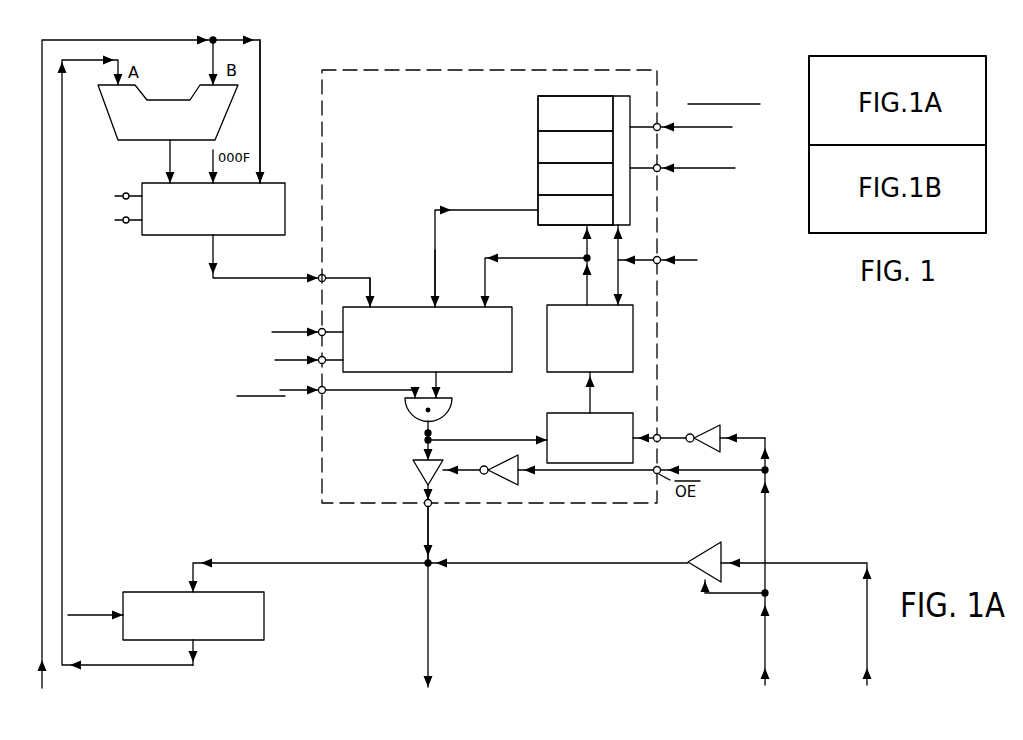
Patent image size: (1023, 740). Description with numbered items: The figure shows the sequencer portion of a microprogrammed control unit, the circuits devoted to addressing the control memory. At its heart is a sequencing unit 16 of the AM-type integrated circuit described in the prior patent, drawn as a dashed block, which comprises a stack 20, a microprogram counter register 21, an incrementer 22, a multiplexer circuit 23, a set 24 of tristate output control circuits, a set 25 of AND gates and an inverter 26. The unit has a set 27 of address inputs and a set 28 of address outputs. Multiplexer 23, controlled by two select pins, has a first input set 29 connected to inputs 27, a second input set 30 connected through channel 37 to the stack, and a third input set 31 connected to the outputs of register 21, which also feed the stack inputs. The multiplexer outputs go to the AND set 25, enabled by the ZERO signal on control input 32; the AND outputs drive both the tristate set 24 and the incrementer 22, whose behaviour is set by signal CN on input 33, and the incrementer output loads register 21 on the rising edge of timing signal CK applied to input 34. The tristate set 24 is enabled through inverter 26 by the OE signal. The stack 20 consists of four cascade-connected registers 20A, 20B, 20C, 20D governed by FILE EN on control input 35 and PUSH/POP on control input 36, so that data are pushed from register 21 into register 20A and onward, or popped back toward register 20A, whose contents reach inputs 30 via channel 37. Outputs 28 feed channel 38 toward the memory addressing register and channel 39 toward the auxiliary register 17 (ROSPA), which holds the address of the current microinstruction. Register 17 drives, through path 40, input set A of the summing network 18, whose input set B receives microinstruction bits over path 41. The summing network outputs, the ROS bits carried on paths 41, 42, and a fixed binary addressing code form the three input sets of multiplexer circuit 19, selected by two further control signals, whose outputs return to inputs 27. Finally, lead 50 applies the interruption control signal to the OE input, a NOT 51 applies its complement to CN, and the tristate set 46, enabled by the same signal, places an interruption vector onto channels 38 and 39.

The sequencing unit 16 is at (462, 69).
The auxiliary register 17 is at (265, 617).
The summing network 18 is at (172, 100).
The multiplexer circuit 19 is at (173, 237).
The stack 20 is at (593, 143).
The register 20A is at (538, 199).
The register 20B is at (538, 176).
The register 20C is at (538, 148).
The register 20D is at (538, 115).
The microprogram counter register 21 is at (633, 337).
The incrementer 22 is at (556, 412).
The multiplexer circuit 23 is at (413, 305).
The set of tristate output control circuits 24 is at (414, 472).
The set of AND gates 25 is at (408, 410).
The inverter 26 is at (506, 483).
The set of address inputs 27 is at (319, 282).
The set of address outputs 28 is at (425, 507).
The input set 29 is at (373, 305).
The second input set 30 is at (438, 304).
The third input set 31 is at (489, 304).
The control input 32 is at (319, 395).
The input 33 is at (660, 442).
The input 34 is at (659, 265).
The control input 35 is at (660, 124).
The control input 36 is at (660, 172).
The channel 37 is at (446, 210).
The channel 38 is at (430, 634).
The channel 39 is at (316, 565).
The path 40 is at (64, 434).
The path 41 is at (45, 362).
The path 42 is at (262, 112).
The tristate set 46 is at (700, 554).
The lead 50 is at (762, 621).
The NOT 51 is at (712, 428).